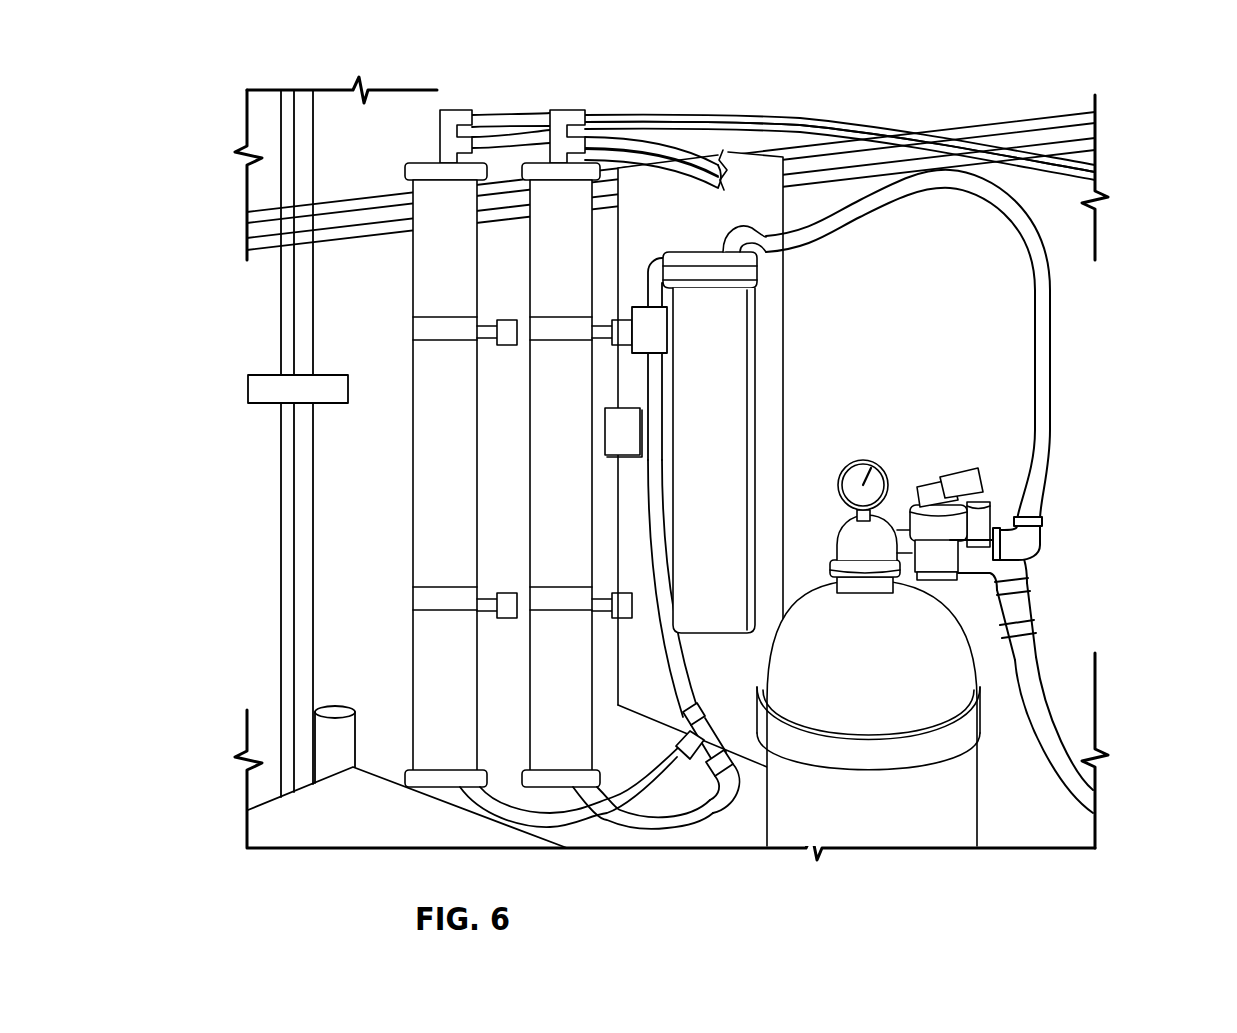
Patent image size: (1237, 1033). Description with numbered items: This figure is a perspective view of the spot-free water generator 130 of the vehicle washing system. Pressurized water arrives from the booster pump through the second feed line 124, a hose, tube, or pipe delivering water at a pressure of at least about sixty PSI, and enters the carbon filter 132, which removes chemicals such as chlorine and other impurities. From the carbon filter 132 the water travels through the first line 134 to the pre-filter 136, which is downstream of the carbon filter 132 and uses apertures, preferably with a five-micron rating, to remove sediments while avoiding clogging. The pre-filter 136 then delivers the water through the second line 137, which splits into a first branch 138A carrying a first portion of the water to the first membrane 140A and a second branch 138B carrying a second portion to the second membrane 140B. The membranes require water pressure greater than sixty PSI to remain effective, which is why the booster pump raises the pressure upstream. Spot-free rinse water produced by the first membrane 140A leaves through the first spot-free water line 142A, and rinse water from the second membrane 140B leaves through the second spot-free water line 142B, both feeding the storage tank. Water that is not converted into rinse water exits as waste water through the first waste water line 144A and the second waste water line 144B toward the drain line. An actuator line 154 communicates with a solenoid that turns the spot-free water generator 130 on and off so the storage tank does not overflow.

The second feed line 124 is at (1048, 730).
The spot-free water generator 130 is at (1075, 382).
The carbon filter 132 is at (937, 830).
The first line 134 is at (1045, 283).
The pre-filter 136 is at (733, 433).
The second line 137 is at (748, 800).
The first branch 138A is at (650, 817).
The second branch 138B is at (553, 822).
The first membrane 140A is at (560, 560).
The second membrane 140B is at (447, 507).
The first spot-free water line 142A is at (507, 115).
The second spot-free water line 142B is at (602, 115).
The first waste water line 144A is at (697, 177).
The second waste water line 144B is at (703, 177).
The actuator line 154 is at (613, 428).